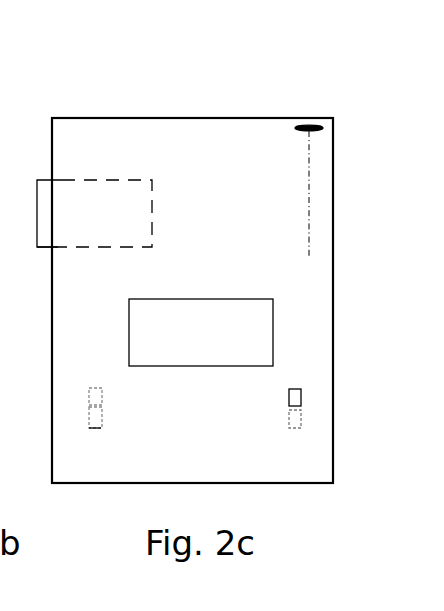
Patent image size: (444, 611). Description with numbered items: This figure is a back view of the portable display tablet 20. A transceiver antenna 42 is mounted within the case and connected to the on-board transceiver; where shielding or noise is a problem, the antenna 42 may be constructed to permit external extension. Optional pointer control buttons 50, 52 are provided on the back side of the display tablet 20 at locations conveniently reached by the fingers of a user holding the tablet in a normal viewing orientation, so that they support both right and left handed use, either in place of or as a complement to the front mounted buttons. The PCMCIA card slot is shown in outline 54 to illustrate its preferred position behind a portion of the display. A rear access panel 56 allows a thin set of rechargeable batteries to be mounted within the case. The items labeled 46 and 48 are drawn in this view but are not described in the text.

The display tablet 20 is at (54, 84).
The transceiver antenna 42 is at (310, 163).
The battery compartment 46 is at (0, 216).
The side connector region 48 is at (0, 302).
The pointer control button 50 is at (96, 428).
The pointer control button 52 is at (301, 393).
The PCMCIA card slot outline 54 is at (61, 248).
The rear access panel 56 is at (275, 313).